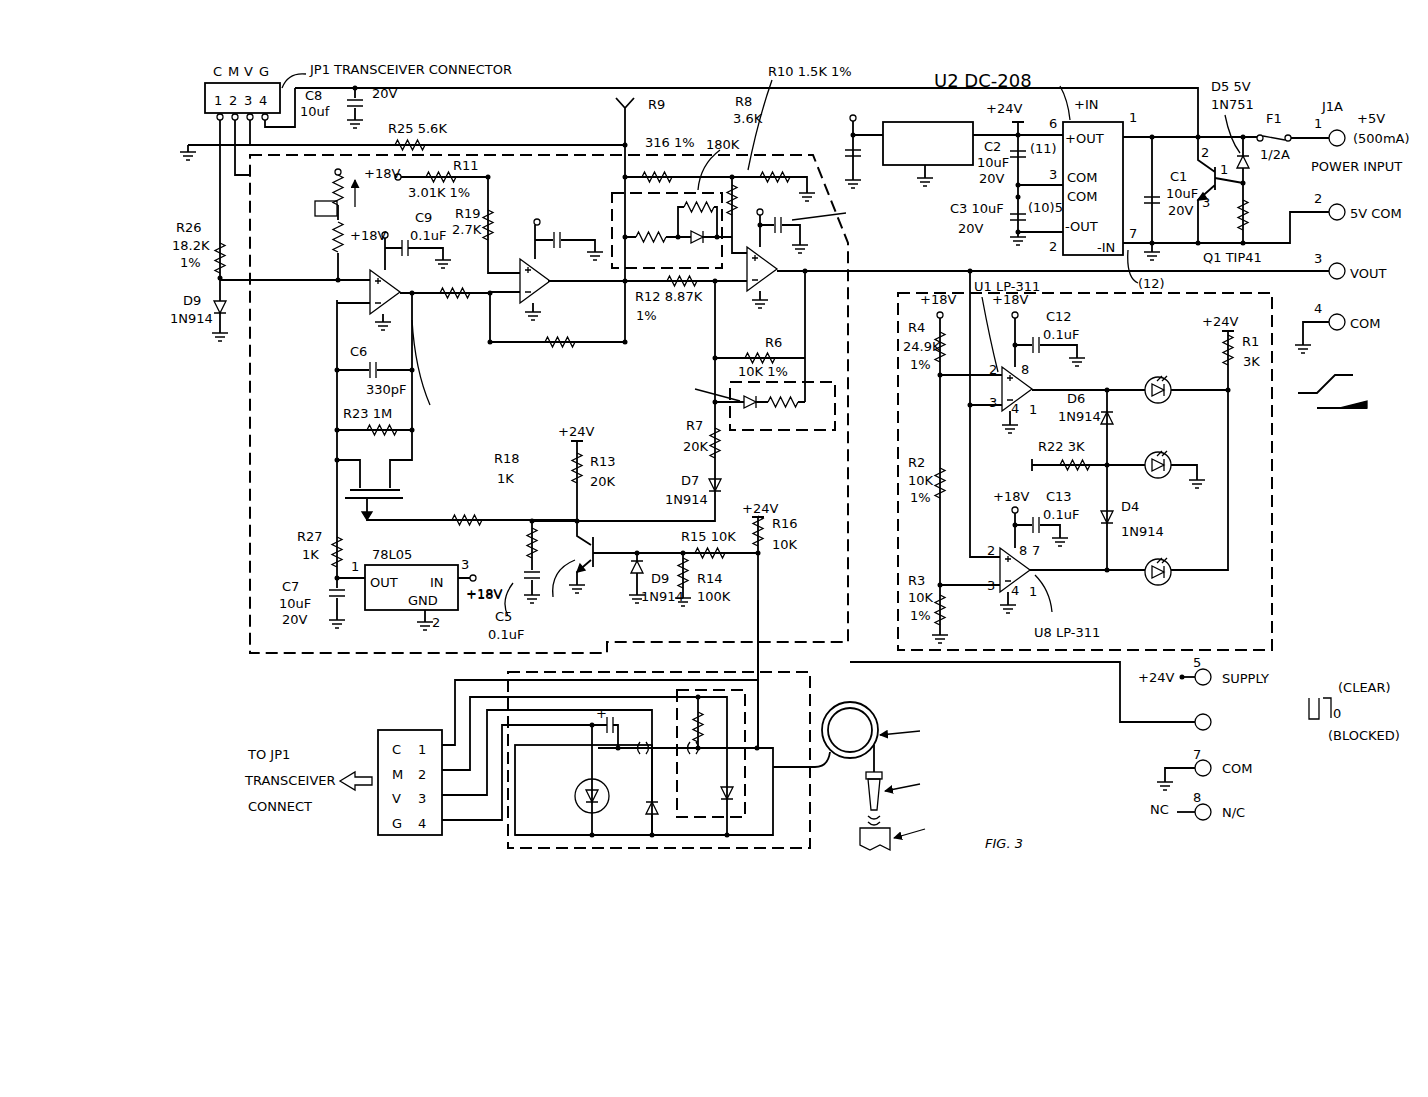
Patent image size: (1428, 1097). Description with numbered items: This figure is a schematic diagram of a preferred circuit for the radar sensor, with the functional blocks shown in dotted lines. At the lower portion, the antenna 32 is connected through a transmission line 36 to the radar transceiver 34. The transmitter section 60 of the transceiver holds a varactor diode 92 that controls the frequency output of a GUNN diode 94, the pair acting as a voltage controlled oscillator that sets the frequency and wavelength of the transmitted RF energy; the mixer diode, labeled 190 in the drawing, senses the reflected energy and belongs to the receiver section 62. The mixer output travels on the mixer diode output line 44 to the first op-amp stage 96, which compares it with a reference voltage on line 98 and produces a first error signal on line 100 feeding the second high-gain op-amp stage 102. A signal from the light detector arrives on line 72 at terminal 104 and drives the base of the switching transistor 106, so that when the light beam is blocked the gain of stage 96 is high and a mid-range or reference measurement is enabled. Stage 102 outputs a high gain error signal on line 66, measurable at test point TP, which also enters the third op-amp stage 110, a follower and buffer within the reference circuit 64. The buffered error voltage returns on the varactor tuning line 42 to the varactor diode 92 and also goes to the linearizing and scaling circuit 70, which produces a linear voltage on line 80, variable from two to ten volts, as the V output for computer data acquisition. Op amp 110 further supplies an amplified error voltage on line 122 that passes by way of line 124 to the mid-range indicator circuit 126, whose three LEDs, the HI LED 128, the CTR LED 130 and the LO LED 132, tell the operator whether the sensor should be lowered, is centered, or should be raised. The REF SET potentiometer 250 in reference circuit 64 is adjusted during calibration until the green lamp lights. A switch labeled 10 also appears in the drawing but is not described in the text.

The increase range switch 10 is at (1338, 392).
The antenna 32 is at (883, 806).
The radar transceiver 34 is at (653, 668).
The transmission line 36 is at (855, 766).
The varactor diode tuning input line 42 is at (478, 143).
The mixer diode output line 44 is at (281, 283).
The transmitter section 60 is at (813, 686).
The receiver section 62 is at (723, 688).
The reference circuit 64 is at (246, 557).
The high gain error signal line 66 is at (620, 144).
The linearizing and scaling circuit 70 is at (706, 272).
The light detector input line 72 is at (1069, 665).
The linear voltage signal line 80 is at (1281, 270).
The varactor diode 92 is at (647, 796).
The GUNN diode 94 is at (580, 790).
The first op-amp stage 96 is at (367, 305).
The reference voltage line 98 is at (335, 510).
The first error signal line 100 is at (487, 345).
The second high-gain op-amp stage 102 is at (521, 302).
The terminal 104 is at (1194, 727).
The switching transistor 106 is at (573, 541).
The third op-amp stage 110 is at (780, 276).
The amplified error voltage line 122 is at (917, 268).
The indicator input line 124 is at (964, 276).
The mid-range indicator circuit 126 is at (897, 481).
The HI LED 128 is at (1147, 379).
The CTR LED 130 is at (1173, 457).
The LO LED 132 is at (1175, 583).
The mixer diode 190 is at (713, 790).
The REF SET potentiometer 250 is at (345, 213).